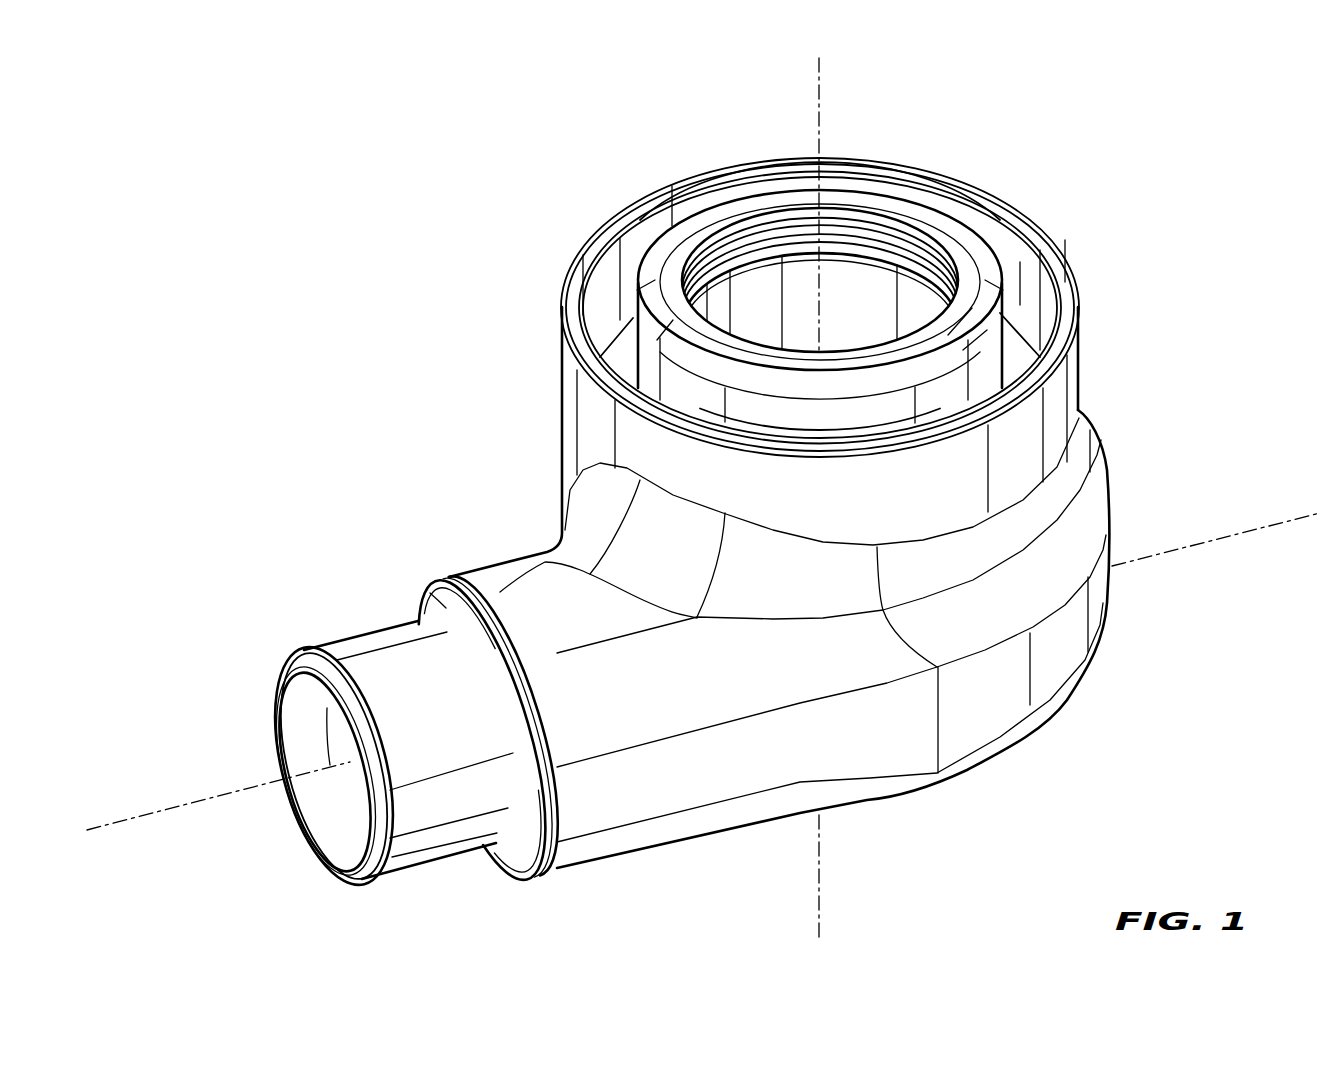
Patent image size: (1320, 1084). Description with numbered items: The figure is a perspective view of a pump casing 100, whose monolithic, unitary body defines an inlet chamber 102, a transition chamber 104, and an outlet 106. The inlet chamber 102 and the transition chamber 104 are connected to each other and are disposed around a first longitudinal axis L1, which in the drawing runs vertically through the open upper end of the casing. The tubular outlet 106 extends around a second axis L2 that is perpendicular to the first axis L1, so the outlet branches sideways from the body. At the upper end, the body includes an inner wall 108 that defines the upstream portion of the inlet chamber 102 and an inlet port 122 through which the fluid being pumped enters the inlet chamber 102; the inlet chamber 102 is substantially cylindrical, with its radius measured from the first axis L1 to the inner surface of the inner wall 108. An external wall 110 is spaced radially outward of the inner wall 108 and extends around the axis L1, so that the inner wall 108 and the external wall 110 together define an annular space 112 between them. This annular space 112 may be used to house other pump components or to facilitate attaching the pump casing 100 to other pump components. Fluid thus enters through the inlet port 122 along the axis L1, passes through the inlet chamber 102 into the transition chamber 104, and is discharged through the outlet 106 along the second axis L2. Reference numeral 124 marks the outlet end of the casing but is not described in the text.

The pump casing 100 is at (1100, 245).
The inlet chamber 102 is at (1070, 370).
The transition chamber 104 is at (1098, 607).
The outlet 106 is at (537, 605).
The inner wall 108 is at (675, 265).
The external wall 110 is at (567, 303).
The annular space 112 is at (1020, 298).
The inlet port 122 is at (866, 287).
The second port opening 124 is at (332, 803).
The first longitudinal axis L1 is at (818, 75).
The second axis L2 is at (143, 812).